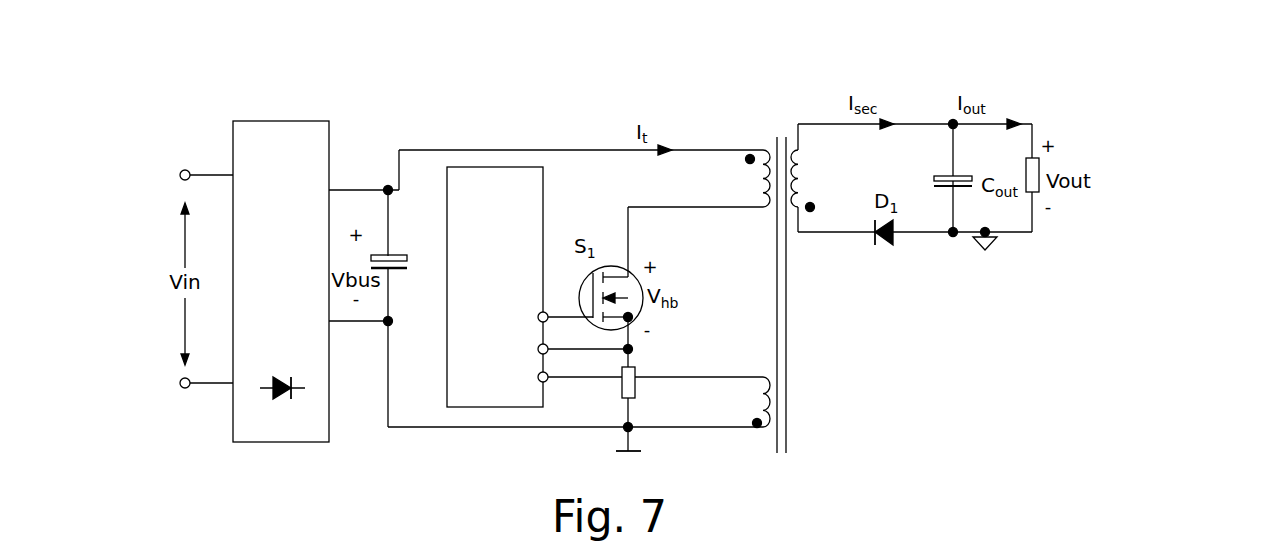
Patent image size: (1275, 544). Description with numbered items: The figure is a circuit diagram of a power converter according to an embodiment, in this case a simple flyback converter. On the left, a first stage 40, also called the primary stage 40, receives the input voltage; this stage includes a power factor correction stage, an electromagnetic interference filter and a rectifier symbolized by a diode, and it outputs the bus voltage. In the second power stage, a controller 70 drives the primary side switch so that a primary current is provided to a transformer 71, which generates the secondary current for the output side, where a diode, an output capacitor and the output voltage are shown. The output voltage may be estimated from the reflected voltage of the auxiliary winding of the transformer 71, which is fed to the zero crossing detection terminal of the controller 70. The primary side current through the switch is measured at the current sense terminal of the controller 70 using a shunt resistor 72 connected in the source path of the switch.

The first stage 40 is at (281, 137).
The controller 70 is at (482, 178).
The transformer 71 is at (775, 143).
The shunt resistor 72 is at (634, 363).